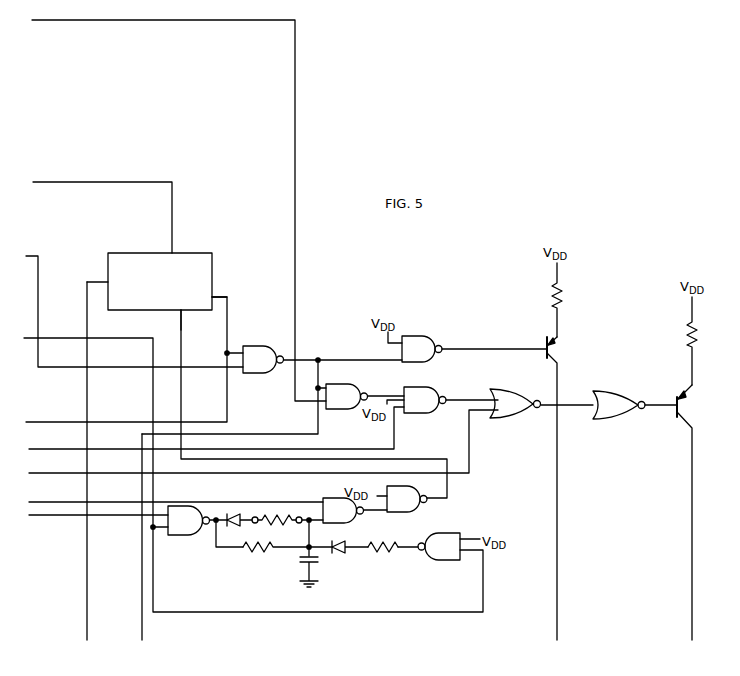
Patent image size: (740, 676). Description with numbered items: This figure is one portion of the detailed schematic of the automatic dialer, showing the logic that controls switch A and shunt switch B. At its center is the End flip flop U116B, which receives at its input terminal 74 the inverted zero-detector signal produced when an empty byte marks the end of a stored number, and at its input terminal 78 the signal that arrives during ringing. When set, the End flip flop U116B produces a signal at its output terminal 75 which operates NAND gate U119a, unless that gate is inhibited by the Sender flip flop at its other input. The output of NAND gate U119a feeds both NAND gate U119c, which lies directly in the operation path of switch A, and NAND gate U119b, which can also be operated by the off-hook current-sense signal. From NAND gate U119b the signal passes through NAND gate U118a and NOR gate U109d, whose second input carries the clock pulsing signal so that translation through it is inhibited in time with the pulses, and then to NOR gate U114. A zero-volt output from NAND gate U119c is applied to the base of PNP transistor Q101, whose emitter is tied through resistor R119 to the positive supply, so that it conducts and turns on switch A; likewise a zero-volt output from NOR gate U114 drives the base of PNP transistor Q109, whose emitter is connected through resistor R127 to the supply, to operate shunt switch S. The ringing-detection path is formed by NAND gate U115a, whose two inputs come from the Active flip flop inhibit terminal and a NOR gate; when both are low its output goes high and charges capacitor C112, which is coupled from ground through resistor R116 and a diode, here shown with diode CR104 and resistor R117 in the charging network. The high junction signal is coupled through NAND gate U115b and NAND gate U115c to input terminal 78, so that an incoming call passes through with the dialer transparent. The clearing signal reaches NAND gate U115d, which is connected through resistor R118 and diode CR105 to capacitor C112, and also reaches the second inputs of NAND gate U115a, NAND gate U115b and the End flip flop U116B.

The End flip flop U116B is at (216, 249).
The input terminal of End flip flop 74 is at (106, 282).
The output terminal of End flip flop 75 is at (213, 299).
The input terminal of End flip flop 78 is at (181, 312).
The NAND gate U119a is at (275, 346).
The NAND gate U119b is at (343, 410).
The NAND gate U119c is at (434, 336).
The NAND gate U118a is at (429, 411).
The NOR gate U109d is at (521, 416).
The NOR gate U114 is at (627, 416).
The NAND gate U115a is at (183, 535).
The NAND gate U115b is at (335, 498).
The NAND gate U115c is at (408, 491).
The NAND gate U115d is at (466, 533).
The diode CR104 is at (230, 513).
The resistor R116 is at (290, 511).
The resistor R117 is at (266, 552).
The capacitor C112 is at (308, 565).
The diode CR105 is at (333, 553).
The resistor R118 is at (390, 556).
The resistor R119 is at (540, 300).
The PNP transistor Q101 is at (552, 340).
The resistor R127 is at (671, 341).
The PNP transistor Q109 is at (676, 419).